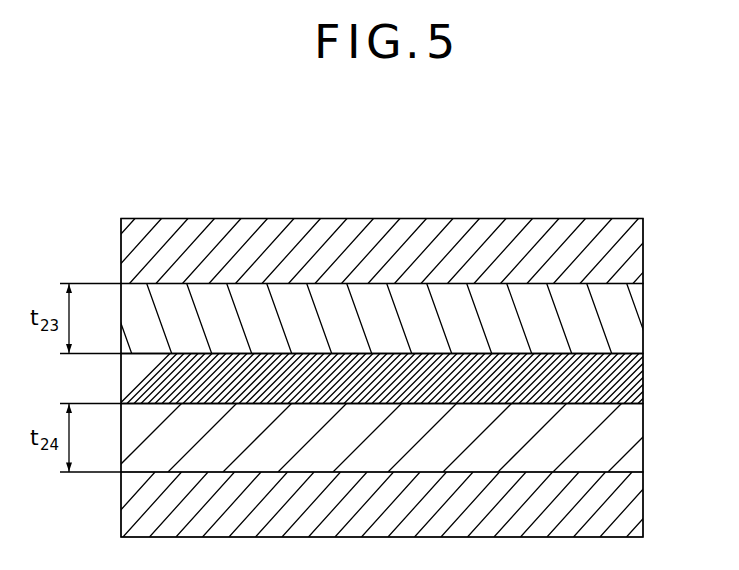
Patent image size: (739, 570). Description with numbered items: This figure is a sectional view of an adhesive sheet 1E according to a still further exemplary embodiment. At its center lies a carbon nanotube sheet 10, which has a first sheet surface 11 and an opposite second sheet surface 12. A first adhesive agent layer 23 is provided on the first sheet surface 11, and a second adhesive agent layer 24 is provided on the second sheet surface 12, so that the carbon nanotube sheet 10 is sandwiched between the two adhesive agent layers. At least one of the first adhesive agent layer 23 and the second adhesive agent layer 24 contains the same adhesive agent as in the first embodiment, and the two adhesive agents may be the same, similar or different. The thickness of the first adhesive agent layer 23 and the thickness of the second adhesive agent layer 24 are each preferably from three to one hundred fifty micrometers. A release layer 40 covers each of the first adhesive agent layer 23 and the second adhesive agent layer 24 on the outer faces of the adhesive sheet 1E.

The adhesive sheet 1E is at (566, 143).
The carbon nanotube sheet 10 is at (643, 379).
The first sheet surface 11 is at (622, 354).
The second sheet surface 12 is at (620, 404).
The first adhesive agent layer 23 is at (637, 320).
The second adhesive agent layer 24 is at (637, 440).
The release layer 40 is at (637, 243).